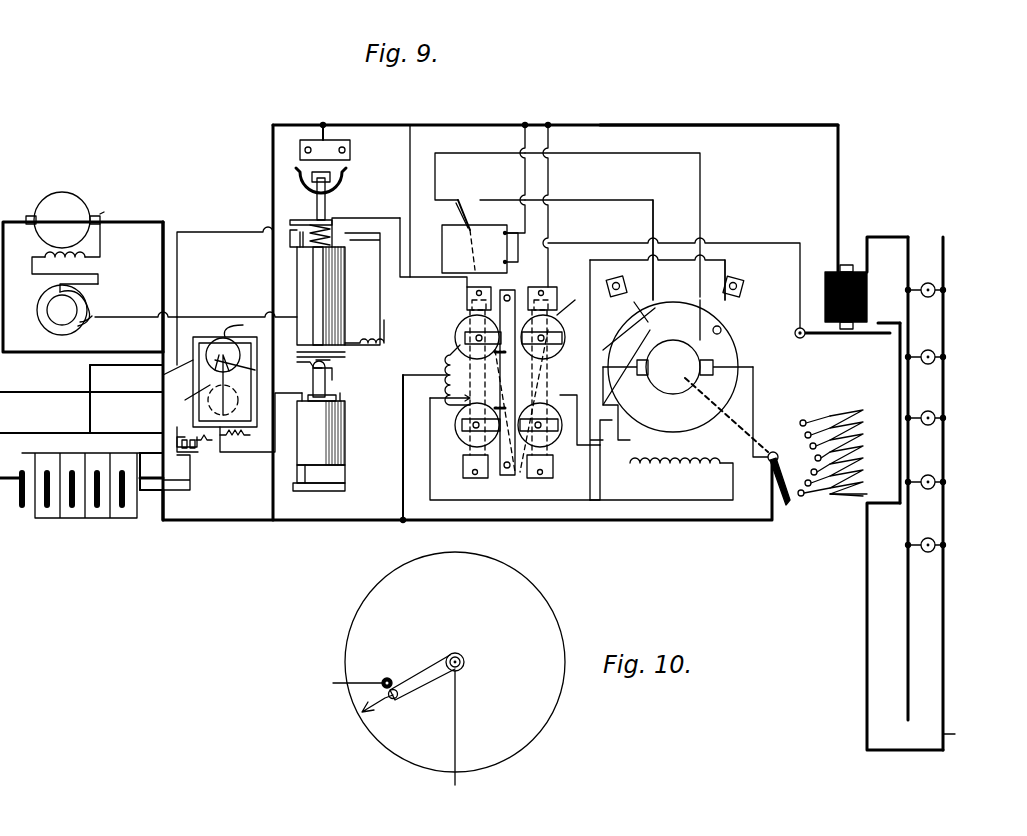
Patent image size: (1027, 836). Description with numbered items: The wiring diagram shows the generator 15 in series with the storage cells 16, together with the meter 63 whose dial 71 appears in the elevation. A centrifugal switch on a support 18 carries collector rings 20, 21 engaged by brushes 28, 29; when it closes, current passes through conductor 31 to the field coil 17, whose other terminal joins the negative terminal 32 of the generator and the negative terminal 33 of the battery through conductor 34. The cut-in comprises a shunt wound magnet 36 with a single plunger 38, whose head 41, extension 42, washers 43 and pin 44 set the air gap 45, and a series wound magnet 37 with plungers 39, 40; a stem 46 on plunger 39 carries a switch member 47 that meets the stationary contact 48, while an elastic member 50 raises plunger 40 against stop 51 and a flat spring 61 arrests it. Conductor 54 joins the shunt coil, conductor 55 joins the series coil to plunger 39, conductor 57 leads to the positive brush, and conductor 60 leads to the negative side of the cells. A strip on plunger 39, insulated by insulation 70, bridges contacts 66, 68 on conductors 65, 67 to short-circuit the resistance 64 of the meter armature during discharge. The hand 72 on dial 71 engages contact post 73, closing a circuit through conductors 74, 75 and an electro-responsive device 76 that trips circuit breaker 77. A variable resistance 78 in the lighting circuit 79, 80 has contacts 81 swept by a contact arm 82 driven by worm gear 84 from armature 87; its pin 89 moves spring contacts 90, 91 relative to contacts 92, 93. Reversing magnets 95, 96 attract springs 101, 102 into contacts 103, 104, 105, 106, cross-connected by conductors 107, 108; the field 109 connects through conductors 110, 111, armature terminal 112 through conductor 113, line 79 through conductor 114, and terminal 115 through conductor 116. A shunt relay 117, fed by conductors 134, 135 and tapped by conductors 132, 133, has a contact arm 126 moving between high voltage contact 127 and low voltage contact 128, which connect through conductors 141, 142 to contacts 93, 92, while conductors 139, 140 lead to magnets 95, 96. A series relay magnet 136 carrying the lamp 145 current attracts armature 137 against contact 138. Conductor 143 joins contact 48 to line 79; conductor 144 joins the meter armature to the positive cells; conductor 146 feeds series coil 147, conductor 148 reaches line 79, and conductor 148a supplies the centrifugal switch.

In FIG. 9, the generator 15 is at (62, 192).
In FIG. 9, the storage cells 16 is at (35, 520).
In FIG. 9, the field coil 17 is at (45, 257).
In FIG. 9, the support 18 is at (15, 212).
In FIG. 9, the collector ring 20 is at (42, 297).
In FIG. 9, the collector ring 21 is at (56, 312).
In FIG. 9, the brush 28 is at (88, 298).
In FIG. 9, the brush 29 is at (86, 322).
In FIG. 9, the conductor 31 is at (90, 278).
In FIG. 9, the negative terminal of the generator 32 is at (108, 210).
In FIG. 9, the negative terminal of the battery 33 is at (155, 522).
In FIG. 9, the conductor 34 is at (163, 265).
In FIG. 9, the shunt wound magnet 36 is at (346, 426).
In FIG. 9, the series wound magnet 37 is at (345, 300).
In FIG. 9, the plunger 38 is at (345, 474).
In FIG. 9, the lower plunger 39 is at (338, 343).
In FIG. 9, the upper plunger 40 is at (297, 247).
In FIG. 9, the head 41 is at (331, 491).
In FIG. 9, the extension 42 is at (328, 384).
In FIG. 9, the washers 43 is at (337, 397).
In FIG. 9, the pin 44 is at (305, 220).
In FIG. 9, the air gap 45 is at (297, 476).
In FIG. 9, the stem 46 is at (317, 200).
In FIG. 9, the switch member 47 is at (340, 178).
In FIG. 9, the stationary contact 48 is at (350, 147).
In FIG. 9, the elastic member 50 is at (332, 234).
In FIG. 9, the stop 51 is at (300, 236).
In FIG. 9, the conductor 54 is at (400, 220).
In FIG. 9, the conductor 55 is at (380, 266).
In FIG. 9, the conductor 57 is at (66, 352).
In FIG. 9, the conductor 60 is at (268, 452).
In FIG. 9, the flat spring 61 is at (345, 218).
In FIG. 9, the meter 63 is at (187, 397).
In FIG. 9, the resistance 64 is at (294, 353).
In FIG. 9, the conductor 65 is at (292, 375).
In FIG. 9, the contact 66 is at (294, 362).
In FIG. 9, the conductor 67 is at (326, 372).
In FIG. 9, the contact 68 is at (326, 358).
In FIG. 9, the insulation 70 is at (318, 345).
In FIG. 9, the dial 71 is at (220, 345).
In FIG. 10, the dial 71 is at (565, 654).
In FIG. 10, the hand 72 is at (418, 675).
In FIG. 9, the contact post 73 is at (178, 375).
In FIG. 10, the contact post 73 is at (387, 677).
In FIG. 9, the conductor 74 is at (149, 365).
In FIG. 10, the conductor 74 is at (340, 686).
In FIG. 9, the conductor 75 is at (190, 480).
In FIG. 10, the conductor 75 is at (456, 779).
In FIG. 9, the electro-responsive device 76 is at (163, 447).
In FIG. 9, the circuit breaker 77 is at (190, 450).
In FIG. 9, the variable resistance 78 is at (862, 422).
In FIG. 9, the main lighting circuit conductor 79 is at (760, 120).
In FIG. 9, the main lighting circuit conductor 80 is at (703, 522).
In FIG. 9, the contacts 81 is at (805, 436).
In FIG. 9, the contact arm 82 is at (787, 507).
In FIG. 9, the worm gear 84 is at (748, 432).
In FIG. 9, the armature 87 is at (690, 385).
In FIG. 9, the pin 89 is at (713, 330).
In FIG. 9, the spring contact 90 is at (726, 312).
In FIG. 9, the spring contact 91 is at (632, 312).
In FIG. 9, the contact 92 is at (716, 297).
In FIG. 9, the contact 93 is at (632, 302).
In FIG. 9, the electro-magnets 95 is at (465, 436).
In FIG. 9, the electro-magnets 96 is at (462, 332).
In FIG. 9, the spring 101 is at (466, 372).
In FIG. 9, the spring 102 is at (550, 388).
In FIG. 9, the contact 103 is at (465, 473).
In FIG. 9, the contact 104 is at (553, 476).
In FIG. 9, the contact 105 is at (467, 292).
In FIG. 9, the contact 106 is at (553, 292).
In FIG. 9, the conductor 107 is at (540, 372).
In FIG. 9, the conductor 108 is at (525, 472).
In FIG. 9, the field 109 is at (670, 462).
In FIG. 9, the conductor 110 is at (583, 440).
In FIG. 9, the conductor 111 is at (430, 432).
In FIG. 9, the armature terminal 112 is at (642, 376).
In FIG. 9, the conductor 113 is at (605, 420).
In FIG. 9, the conductor 114 is at (550, 185).
In FIG. 9, the armature terminal 115 is at (706, 376).
In FIG. 9, the conductor 116 is at (755, 402).
In FIG. 9, the shunt relay 117 is at (488, 232).
In FIG. 9, the contact arm 126 is at (468, 208).
In FIG. 9, the high voltage contact 127 is at (490, 197).
In FIG. 9, the low voltage contact 128 is at (458, 198).
In FIG. 9, the conductor 132 is at (403, 441).
In FIG. 9, the conductor 133 is at (410, 182).
In FIG. 9, the conductor 134 is at (523, 143).
In FIG. 9, the conductor 135 is at (604, 243).
In FIG. 9, the series relay magnet 136 is at (868, 292).
In FIG. 9, the armature 137 is at (862, 337).
In FIG. 9, the contact 138 is at (883, 323).
In FIG. 9, the conductor 139 is at (560, 340).
In FIG. 9, the conductor 140 is at (636, 261).
In FIG. 9, the conductor 141 is at (658, 192).
In FIG. 9, the conductor 142 is at (678, 153).
In FIG. 9, the conductor 143 is at (322, 125).
In FIG. 9, the conductor 144 is at (44, 430).
In FIG. 9, the lamps 145 is at (932, 478).
In FIG. 9, the conductor 146 is at (45, 390).
In FIG. 9, the series coil 147 is at (255, 370).
In FIG. 9, the conductor 148 is at (268, 318).
In FIG. 9, the conductor 148a is at (128, 310).